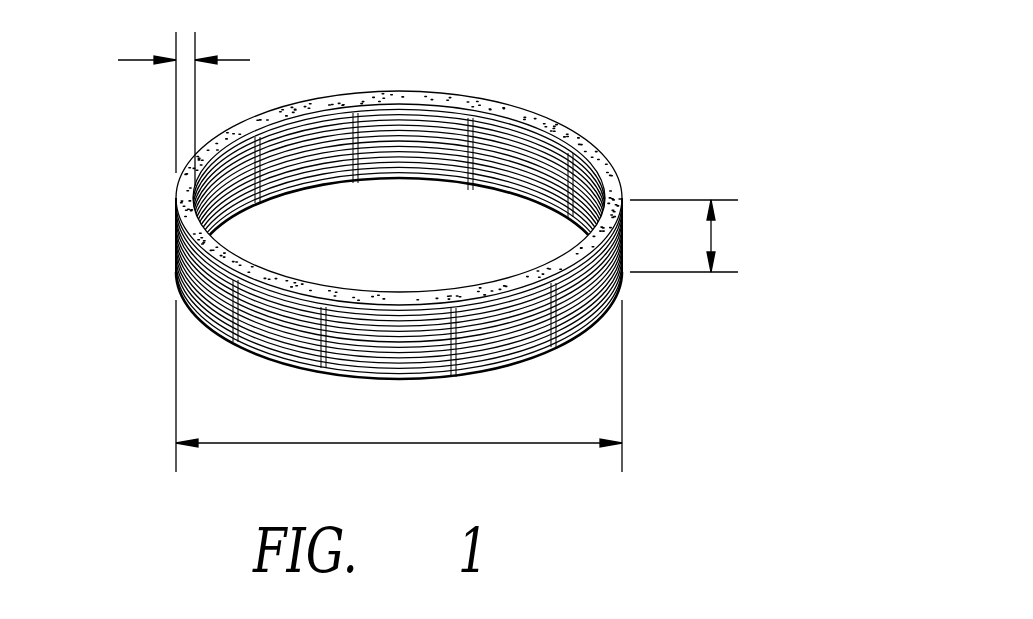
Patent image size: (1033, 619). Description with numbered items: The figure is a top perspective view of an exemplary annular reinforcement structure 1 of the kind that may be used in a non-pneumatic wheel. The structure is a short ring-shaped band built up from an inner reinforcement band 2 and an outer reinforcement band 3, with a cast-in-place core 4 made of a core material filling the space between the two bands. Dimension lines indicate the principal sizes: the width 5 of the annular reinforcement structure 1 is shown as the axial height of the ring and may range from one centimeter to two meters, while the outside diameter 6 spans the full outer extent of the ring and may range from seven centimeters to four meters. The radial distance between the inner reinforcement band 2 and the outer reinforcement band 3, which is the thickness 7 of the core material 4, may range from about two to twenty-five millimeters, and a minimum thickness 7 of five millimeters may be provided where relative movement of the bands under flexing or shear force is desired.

The annular reinforcement structure 1 is at (437, 192).
The inner reinforcement band 2 is at (298, 285).
The outer reinforcement band 3 is at (447, 93).
The cast-in-place core 4 is at (305, 110).
The width 5 is at (713, 237).
The outside diameter 6 is at (383, 445).
The thickness 7 is at (138, 58).